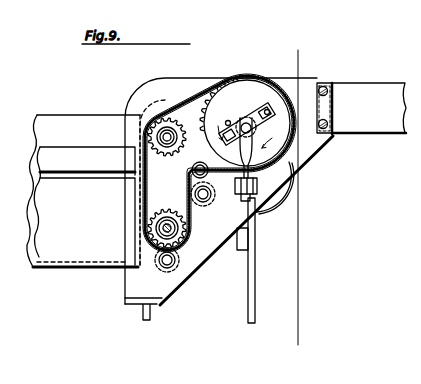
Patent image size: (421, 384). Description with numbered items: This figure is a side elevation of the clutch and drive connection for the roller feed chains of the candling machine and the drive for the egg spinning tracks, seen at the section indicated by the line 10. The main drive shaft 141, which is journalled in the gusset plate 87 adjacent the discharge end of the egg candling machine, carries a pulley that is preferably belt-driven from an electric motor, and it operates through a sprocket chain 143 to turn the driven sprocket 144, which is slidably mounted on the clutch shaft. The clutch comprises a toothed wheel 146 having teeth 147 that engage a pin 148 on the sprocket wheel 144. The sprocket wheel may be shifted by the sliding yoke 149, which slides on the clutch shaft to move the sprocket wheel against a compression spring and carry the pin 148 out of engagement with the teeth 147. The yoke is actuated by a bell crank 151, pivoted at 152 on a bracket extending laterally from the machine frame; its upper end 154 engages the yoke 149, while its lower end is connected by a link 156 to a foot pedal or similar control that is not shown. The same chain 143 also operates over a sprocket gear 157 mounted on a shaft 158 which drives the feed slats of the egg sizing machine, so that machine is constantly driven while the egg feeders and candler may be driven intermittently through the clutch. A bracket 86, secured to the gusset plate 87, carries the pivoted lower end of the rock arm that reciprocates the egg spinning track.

The section line 10- 10 is at (302, 61).
The bracket 86 is at (242, 246).
The gusset plate 87 is at (318, 143).
The main drive shaft 141 is at (158, 230).
The sprocket chain 143 is at (182, 102).
The driven sprocket 144 is at (257, 92).
The toothed wheel 146 is at (243, 112).
The teeth 147 is at (251, 131).
The pin 148 is at (227, 121).
The sliding yoke 149 is at (269, 112).
The bell crank 151 is at (256, 152).
The pivot 152 is at (262, 188).
The upper end 154 is at (270, 119).
The link 156 is at (248, 312).
The sprocket gear 157 is at (152, 118).
The shaft 158 is at (163, 136).